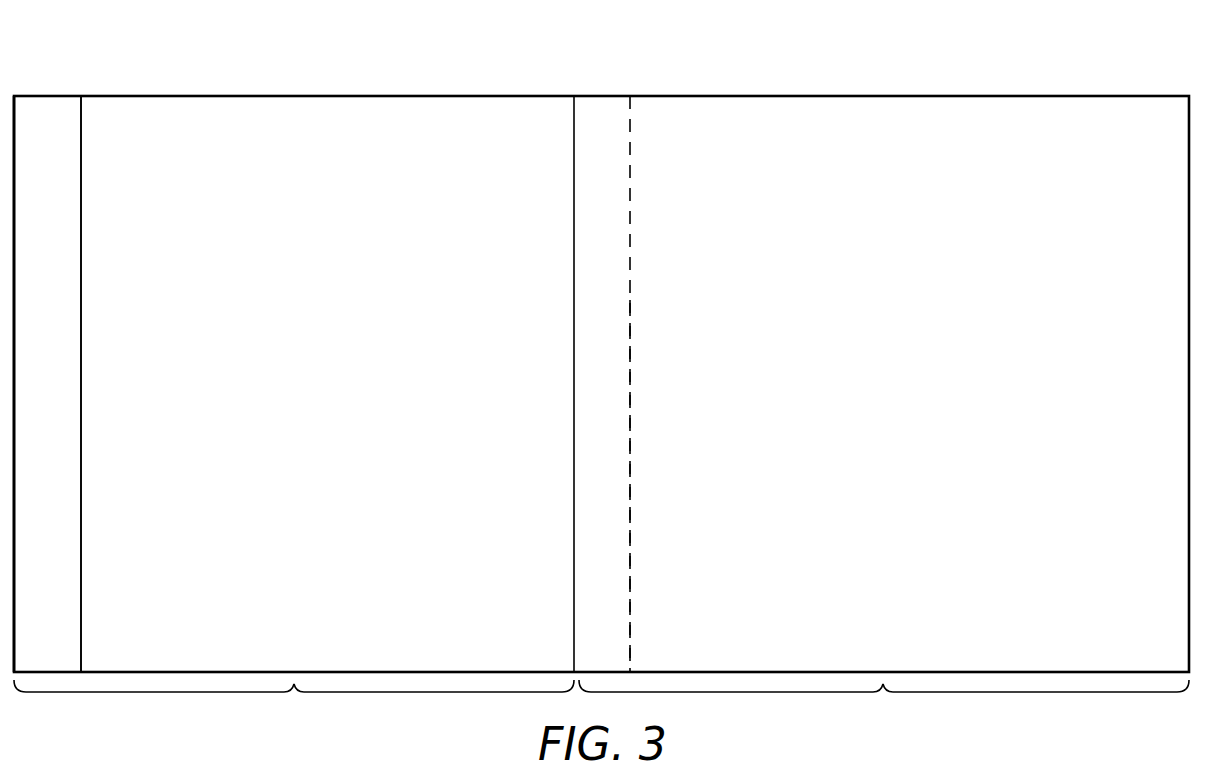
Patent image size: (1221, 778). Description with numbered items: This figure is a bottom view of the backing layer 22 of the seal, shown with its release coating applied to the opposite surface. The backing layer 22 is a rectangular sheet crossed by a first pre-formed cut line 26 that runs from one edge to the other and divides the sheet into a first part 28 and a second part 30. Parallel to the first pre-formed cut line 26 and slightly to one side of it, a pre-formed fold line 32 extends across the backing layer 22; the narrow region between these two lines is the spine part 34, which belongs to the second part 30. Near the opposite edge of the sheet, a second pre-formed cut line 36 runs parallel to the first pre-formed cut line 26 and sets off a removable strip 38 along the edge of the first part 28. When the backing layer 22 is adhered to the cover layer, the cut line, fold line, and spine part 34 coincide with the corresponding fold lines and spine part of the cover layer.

The backing layer 22 is at (1147, 84).
The first pre-formed cut line 26 is at (574, 146).
The first part 28 is at (294, 703).
The second part 30 is at (884, 703).
The pre-formed fold line 32 is at (632, 147).
The spine part 34 is at (608, 383).
The second pre-formed cut line 36 is at (81, 146).
The removable strip 38 is at (60, 383).